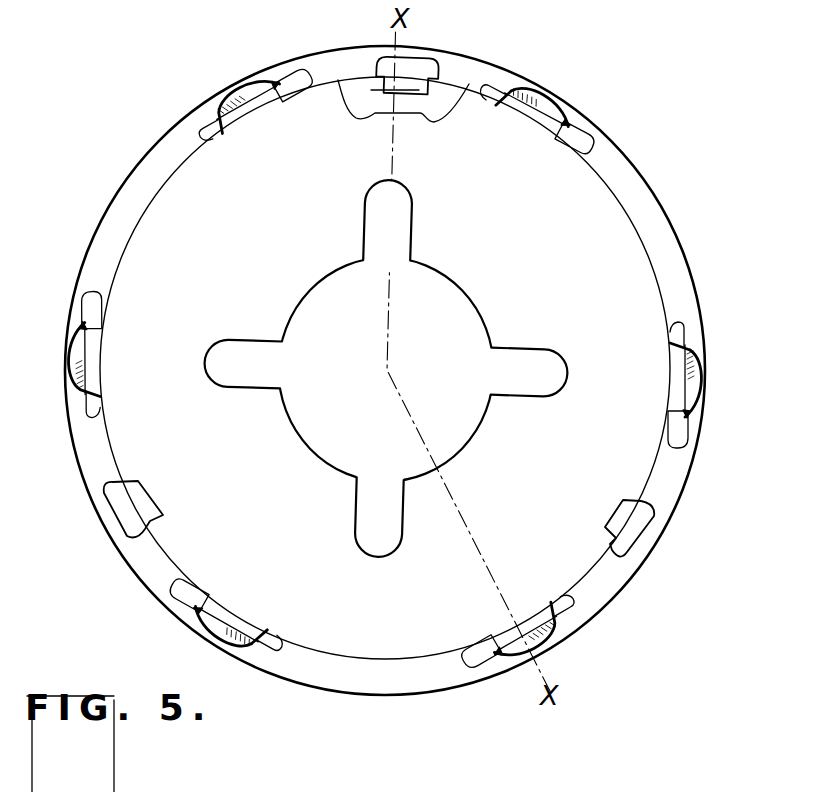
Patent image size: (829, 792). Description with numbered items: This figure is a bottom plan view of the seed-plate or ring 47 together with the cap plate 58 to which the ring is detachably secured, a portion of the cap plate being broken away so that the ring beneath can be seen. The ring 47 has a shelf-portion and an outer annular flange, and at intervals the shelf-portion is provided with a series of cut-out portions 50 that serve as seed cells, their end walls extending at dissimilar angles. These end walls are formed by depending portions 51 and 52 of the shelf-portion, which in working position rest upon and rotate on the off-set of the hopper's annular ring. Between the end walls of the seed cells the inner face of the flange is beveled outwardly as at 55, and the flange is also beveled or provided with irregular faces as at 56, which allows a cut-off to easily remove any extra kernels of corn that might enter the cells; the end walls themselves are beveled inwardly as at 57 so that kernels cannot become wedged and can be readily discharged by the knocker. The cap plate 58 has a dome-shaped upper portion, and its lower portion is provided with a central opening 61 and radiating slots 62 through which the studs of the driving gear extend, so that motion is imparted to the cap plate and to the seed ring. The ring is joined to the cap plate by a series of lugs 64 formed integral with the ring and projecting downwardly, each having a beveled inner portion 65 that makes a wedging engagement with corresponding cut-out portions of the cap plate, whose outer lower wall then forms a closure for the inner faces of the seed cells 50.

The seed-plate or ring 47 is at (626, 574).
The cut-out portions (seed cells) 50 is at (680, 368).
The depending portion 51 is at (668, 436).
The depending portion 52 is at (684, 331).
The outwardly beveled inner face of flange 55 is at (693, 386).
The beveled or irregular faces of flange 56 is at (688, 415).
The inwardly beveled end wall of seed cell 57 is at (680, 341).
The cap plate 58 is at (385, 368).
The central opening 61 is at (386, 368).
The radiating slots 62 is at (532, 382).
The lugs 64 is at (387, 68).
The beveled inner portions 65 is at (390, 96).